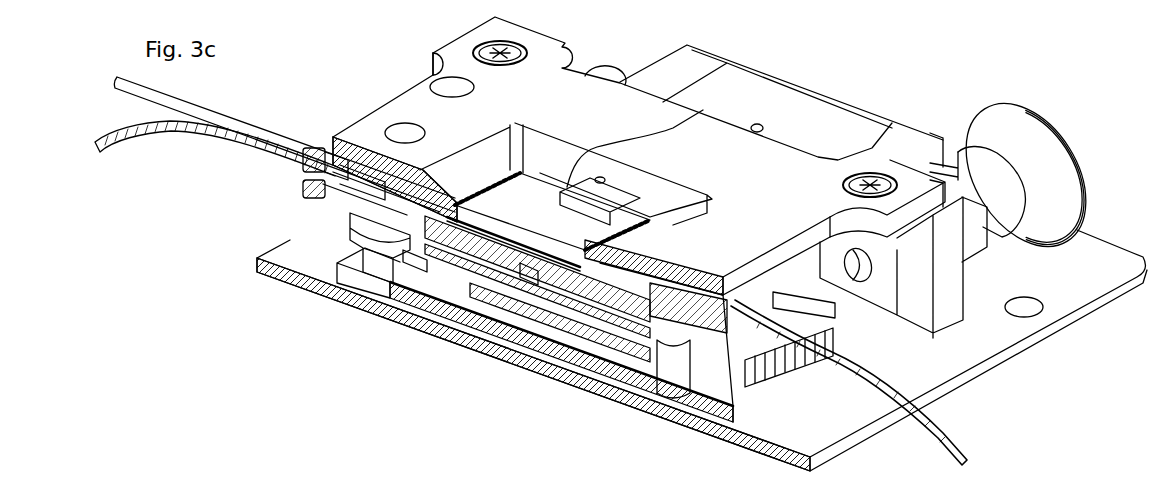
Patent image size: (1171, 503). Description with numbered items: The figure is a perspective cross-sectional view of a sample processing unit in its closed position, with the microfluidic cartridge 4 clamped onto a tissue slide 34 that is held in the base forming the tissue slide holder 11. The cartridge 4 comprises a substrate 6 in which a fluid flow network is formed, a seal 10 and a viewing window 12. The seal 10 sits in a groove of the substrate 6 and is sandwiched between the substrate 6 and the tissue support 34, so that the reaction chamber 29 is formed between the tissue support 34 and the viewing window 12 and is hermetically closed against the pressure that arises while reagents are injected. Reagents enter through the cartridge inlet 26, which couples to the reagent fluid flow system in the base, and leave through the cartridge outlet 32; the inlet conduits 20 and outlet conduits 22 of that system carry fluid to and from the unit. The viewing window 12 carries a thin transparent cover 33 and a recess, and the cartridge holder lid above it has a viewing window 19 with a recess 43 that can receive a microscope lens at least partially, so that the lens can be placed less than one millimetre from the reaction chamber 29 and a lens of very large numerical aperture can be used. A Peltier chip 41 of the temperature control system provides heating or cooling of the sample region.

The microfluidic cartridge 4 is at (573, 190).
The substrate 6 is at (645, 275).
The seal 10 is at (625, 290).
The tissue slide holder 11 is at (380, 316).
The viewing window 12 is at (565, 222).
The viewing window 19 is at (395, 94).
The recess 43 is at (470, 163).
The inlet conduits 20 is at (252, 145).
The outlet conduits 22 is at (920, 406).
The cartridge inlet 26 is at (305, 284).
The reaction chamber 29 is at (535, 240).
The cartridge outlet 32 is at (625, 290).
The transparent cover 33 is at (600, 245).
The tissue support 34 is at (455, 240).
The peltier chip 41 is at (545, 285).